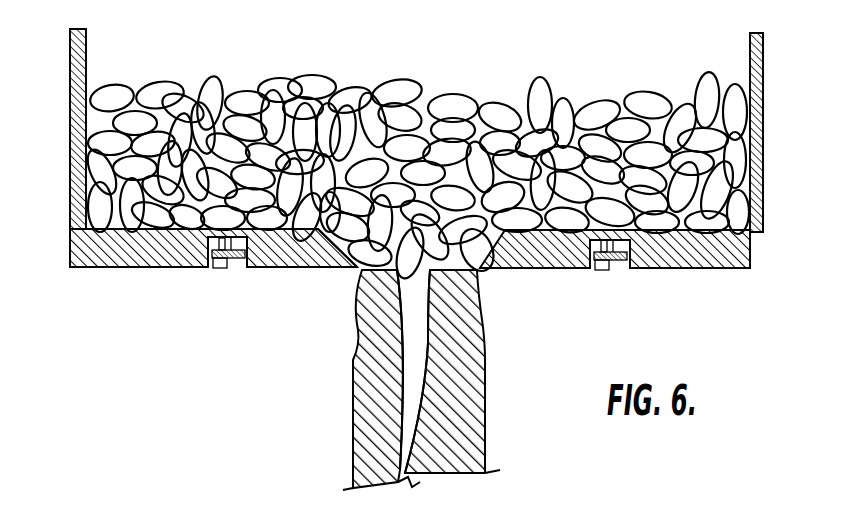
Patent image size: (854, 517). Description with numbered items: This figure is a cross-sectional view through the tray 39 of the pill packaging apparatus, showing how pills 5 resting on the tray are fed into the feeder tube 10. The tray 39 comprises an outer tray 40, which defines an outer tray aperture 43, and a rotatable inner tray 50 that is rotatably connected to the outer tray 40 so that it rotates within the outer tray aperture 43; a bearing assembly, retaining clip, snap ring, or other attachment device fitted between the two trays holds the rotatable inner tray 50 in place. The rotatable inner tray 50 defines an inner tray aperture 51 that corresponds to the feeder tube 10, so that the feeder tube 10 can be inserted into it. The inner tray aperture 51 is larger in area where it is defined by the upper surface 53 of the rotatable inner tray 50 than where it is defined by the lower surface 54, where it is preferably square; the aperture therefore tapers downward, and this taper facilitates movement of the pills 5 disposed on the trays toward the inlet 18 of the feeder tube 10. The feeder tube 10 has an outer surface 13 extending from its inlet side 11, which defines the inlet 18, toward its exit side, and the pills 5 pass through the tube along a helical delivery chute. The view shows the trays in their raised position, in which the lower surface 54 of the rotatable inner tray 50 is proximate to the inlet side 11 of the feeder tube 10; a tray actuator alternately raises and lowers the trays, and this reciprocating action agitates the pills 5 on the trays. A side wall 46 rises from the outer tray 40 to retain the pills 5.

The pills 5 is at (413, 84).
The feeder tube 10 is at (484, 437).
The inlet side 11 is at (495, 268).
The outer surface 13 is at (350, 327).
The inlet 18 is at (432, 264).
The tray 39 is at (62, 234).
The outer tray 40 is at (150, 268).
The outer tray aperture 43 is at (232, 266).
The side wall 46 is at (762, 146).
The rotatable inner tray 50 is at (590, 263).
The inner tray aperture 51 is at (346, 274).
The upper surface 53 is at (672, 232).
The lower surface 54 is at (565, 267).